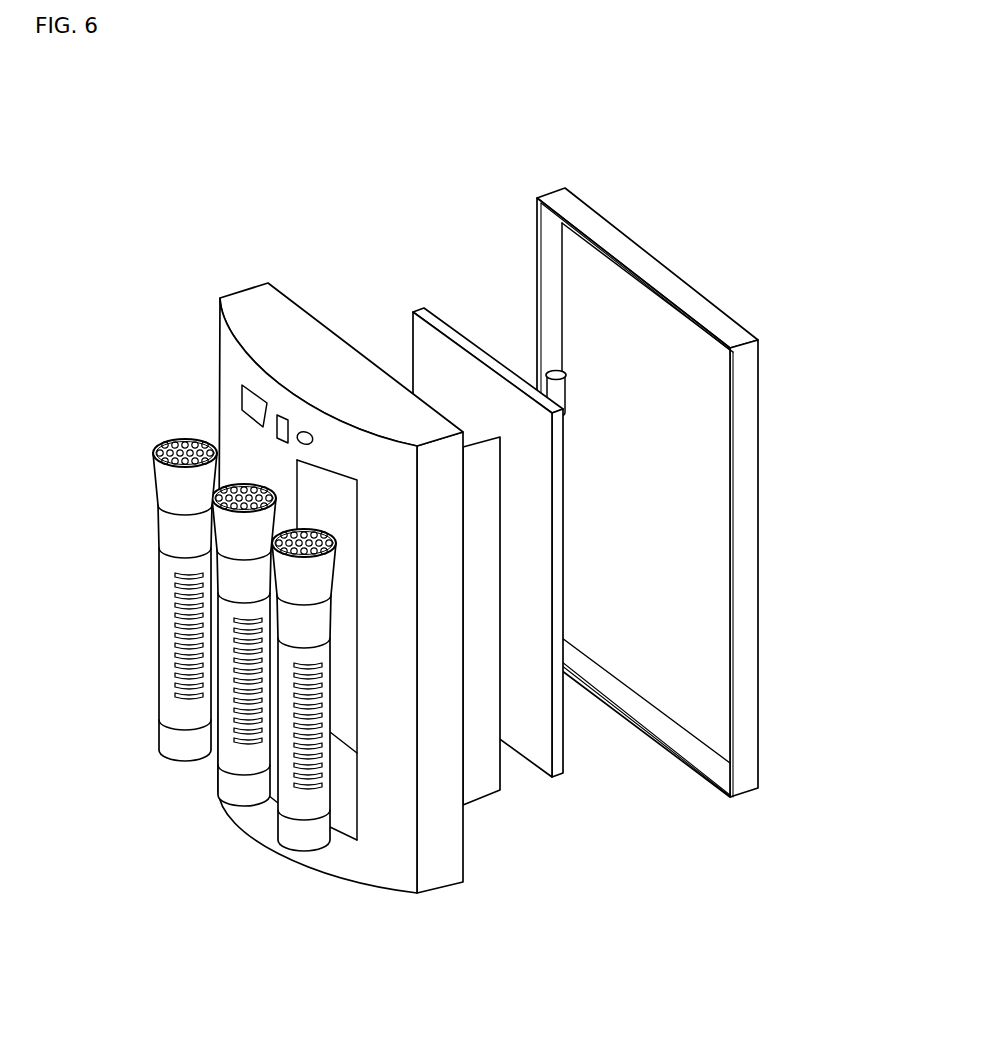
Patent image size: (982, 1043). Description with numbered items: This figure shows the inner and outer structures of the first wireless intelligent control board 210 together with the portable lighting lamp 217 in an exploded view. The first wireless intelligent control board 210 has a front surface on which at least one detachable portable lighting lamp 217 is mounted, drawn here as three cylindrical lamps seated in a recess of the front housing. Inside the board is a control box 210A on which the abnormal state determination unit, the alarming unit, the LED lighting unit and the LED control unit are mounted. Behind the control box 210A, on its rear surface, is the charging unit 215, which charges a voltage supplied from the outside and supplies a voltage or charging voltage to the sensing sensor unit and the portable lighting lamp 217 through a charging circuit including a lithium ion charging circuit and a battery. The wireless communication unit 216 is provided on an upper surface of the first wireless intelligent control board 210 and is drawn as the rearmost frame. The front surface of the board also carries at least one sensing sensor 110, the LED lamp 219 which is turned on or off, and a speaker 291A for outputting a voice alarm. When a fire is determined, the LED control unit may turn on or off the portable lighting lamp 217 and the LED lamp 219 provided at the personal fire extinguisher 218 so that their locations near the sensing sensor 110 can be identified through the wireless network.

The first wireless intelligent control board 210 is at (543, 108).
The control box 210A is at (358, 330).
The charging unit 215 is at (414, 312).
The wireless communication unit 216 is at (548, 372).
The portable lighting lamp 217 is at (177, 707).
The personal fire extinguisher 218 is at (457, 852).
The LED lamp 219 is at (248, 405).
The sensing sensor 110 is at (282, 440).
The speaker 291A is at (303, 445).